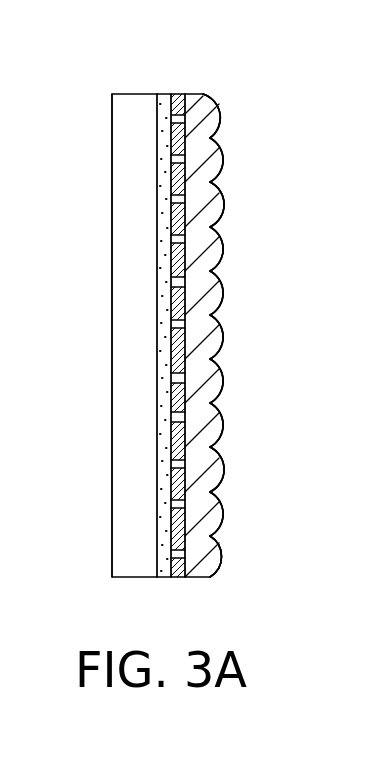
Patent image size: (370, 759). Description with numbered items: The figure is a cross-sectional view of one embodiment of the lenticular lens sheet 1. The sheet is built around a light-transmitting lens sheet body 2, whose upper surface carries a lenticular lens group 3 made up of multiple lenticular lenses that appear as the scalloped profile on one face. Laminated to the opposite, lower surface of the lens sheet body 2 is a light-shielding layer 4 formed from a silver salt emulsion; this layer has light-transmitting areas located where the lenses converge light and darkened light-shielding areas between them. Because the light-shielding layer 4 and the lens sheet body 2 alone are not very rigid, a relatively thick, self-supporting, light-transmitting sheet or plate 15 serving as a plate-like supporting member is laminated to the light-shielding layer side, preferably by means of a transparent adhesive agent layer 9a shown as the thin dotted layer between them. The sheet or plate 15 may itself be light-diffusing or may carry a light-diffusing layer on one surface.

The lenticular lens sheet 1 is at (195, 90).
The lens sheet body 2 is at (200, 101).
The lenticular lens group 3 is at (217, 117).
The light-shielding layer 4 is at (178, 95).
The transparent adhesive agent layer 9a is at (156, 358).
The light-transmitting sheet or plate 15 is at (123, 274).